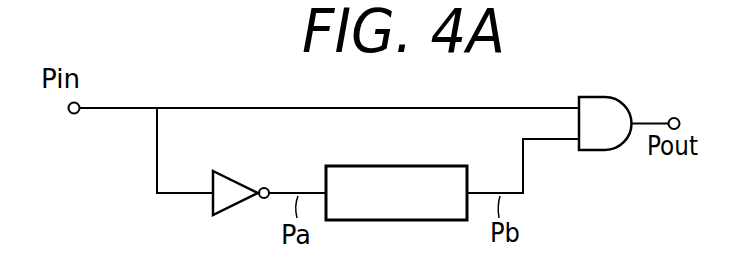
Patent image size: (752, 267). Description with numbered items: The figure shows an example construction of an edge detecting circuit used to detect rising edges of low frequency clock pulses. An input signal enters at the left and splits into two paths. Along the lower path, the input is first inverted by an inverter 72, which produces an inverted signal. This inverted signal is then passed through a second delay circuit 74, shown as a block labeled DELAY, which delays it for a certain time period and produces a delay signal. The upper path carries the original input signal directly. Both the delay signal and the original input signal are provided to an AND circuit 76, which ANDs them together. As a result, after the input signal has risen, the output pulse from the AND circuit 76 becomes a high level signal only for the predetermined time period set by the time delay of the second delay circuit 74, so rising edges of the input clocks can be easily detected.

The inverter 72 is at (250, 182).
The second delay circuit 74 is at (428, 166).
The AND circuit 76 is at (605, 97).